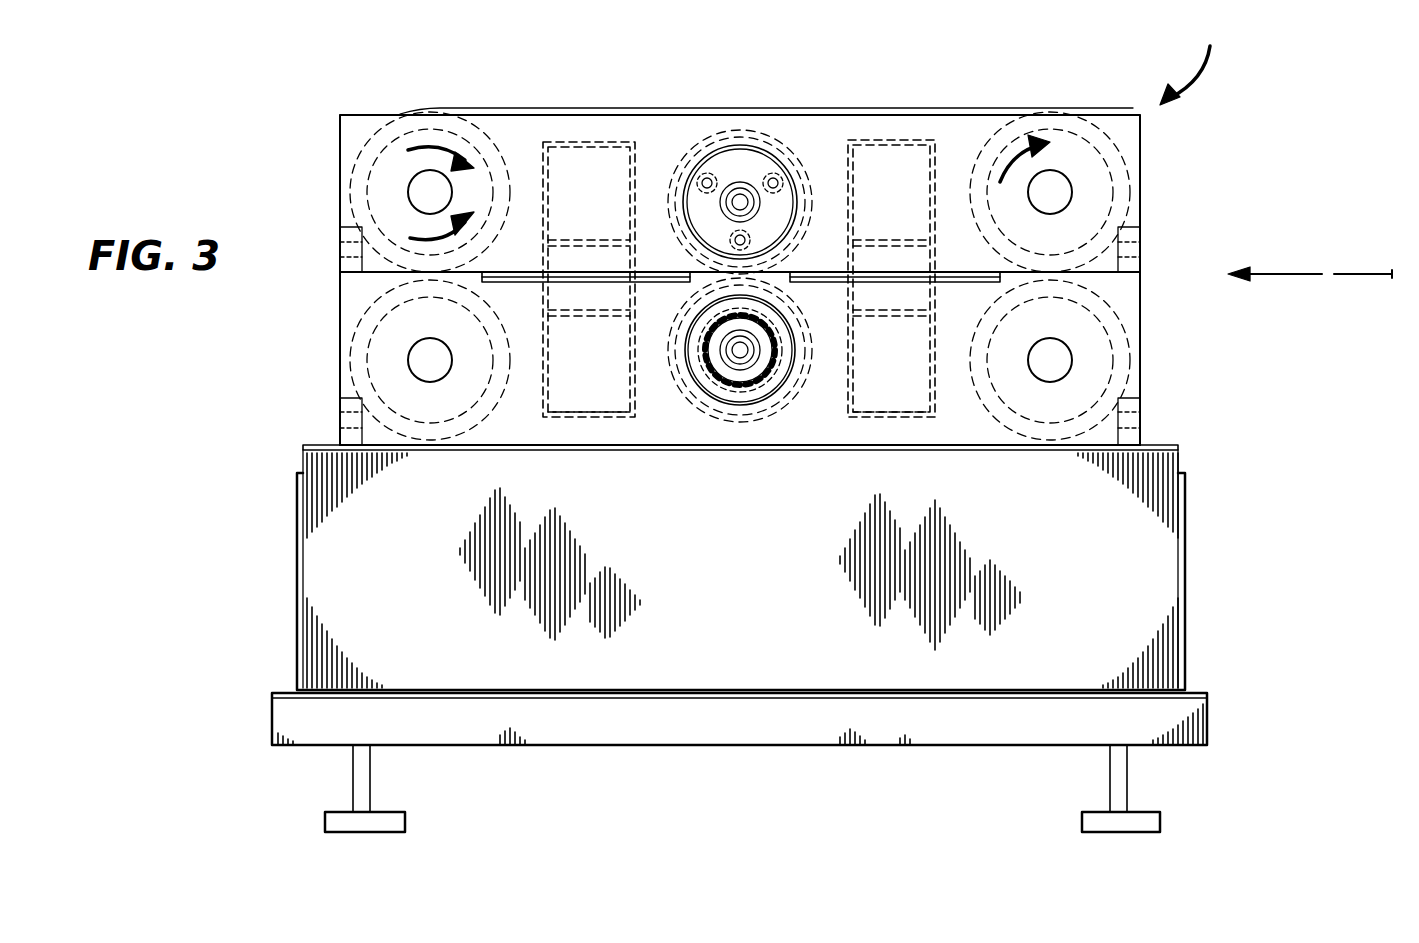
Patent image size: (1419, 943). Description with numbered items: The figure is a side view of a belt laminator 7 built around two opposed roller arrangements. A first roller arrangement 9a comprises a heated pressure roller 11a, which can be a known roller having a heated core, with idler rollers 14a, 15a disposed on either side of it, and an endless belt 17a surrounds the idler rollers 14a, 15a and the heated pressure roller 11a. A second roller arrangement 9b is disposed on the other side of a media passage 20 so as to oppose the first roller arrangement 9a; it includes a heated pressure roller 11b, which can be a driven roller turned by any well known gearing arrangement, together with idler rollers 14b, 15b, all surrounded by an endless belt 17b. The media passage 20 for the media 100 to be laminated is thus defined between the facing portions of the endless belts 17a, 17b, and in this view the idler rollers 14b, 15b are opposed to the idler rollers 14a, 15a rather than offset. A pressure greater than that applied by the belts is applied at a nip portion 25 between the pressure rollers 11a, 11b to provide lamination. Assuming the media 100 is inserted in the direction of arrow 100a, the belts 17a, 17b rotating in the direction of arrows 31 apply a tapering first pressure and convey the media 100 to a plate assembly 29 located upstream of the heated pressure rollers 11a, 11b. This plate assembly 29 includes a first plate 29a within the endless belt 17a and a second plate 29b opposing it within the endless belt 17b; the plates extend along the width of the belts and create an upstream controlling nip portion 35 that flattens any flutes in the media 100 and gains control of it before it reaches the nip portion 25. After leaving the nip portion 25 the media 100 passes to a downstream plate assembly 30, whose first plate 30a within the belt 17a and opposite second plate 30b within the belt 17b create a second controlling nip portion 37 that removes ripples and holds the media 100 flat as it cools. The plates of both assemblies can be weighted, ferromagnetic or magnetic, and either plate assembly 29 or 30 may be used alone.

The belt laminator 7 is at (1212, 38).
The first roller arrangement 9a is at (358, 114).
The second roller arrangement 9b is at (340, 294).
The heated pressure roller 11a is at (740, 158).
The heated pressure roller 11b is at (752, 398).
The idler roller 14a is at (405, 148).
The idler roller 14b is at (378, 372).
The idler roller 15a is at (1070, 145).
The idler roller 15b is at (1105, 372).
The endless belt 17a is at (870, 110).
The endless belt 17b is at (1130, 343).
The media passage 20 is at (1100, 282).
The nip portion 25 is at (772, 280).
The plate assembly 29 is at (884, 275).
The first plate 29a is at (960, 245).
The second plate 29b is at (840, 283).
The plate assembly 30 is at (652, 250).
The first plate 30a is at (520, 275).
The second plate 30b is at (520, 275).
The arrows 31 is at (1005, 165).
The upstream controlling nip portion 35 is at (890, 285).
The second controlling nip portion 37 is at (585, 285).
The media to be laminated 100 is at (1356, 274).
The arrow 100a is at (1285, 245).